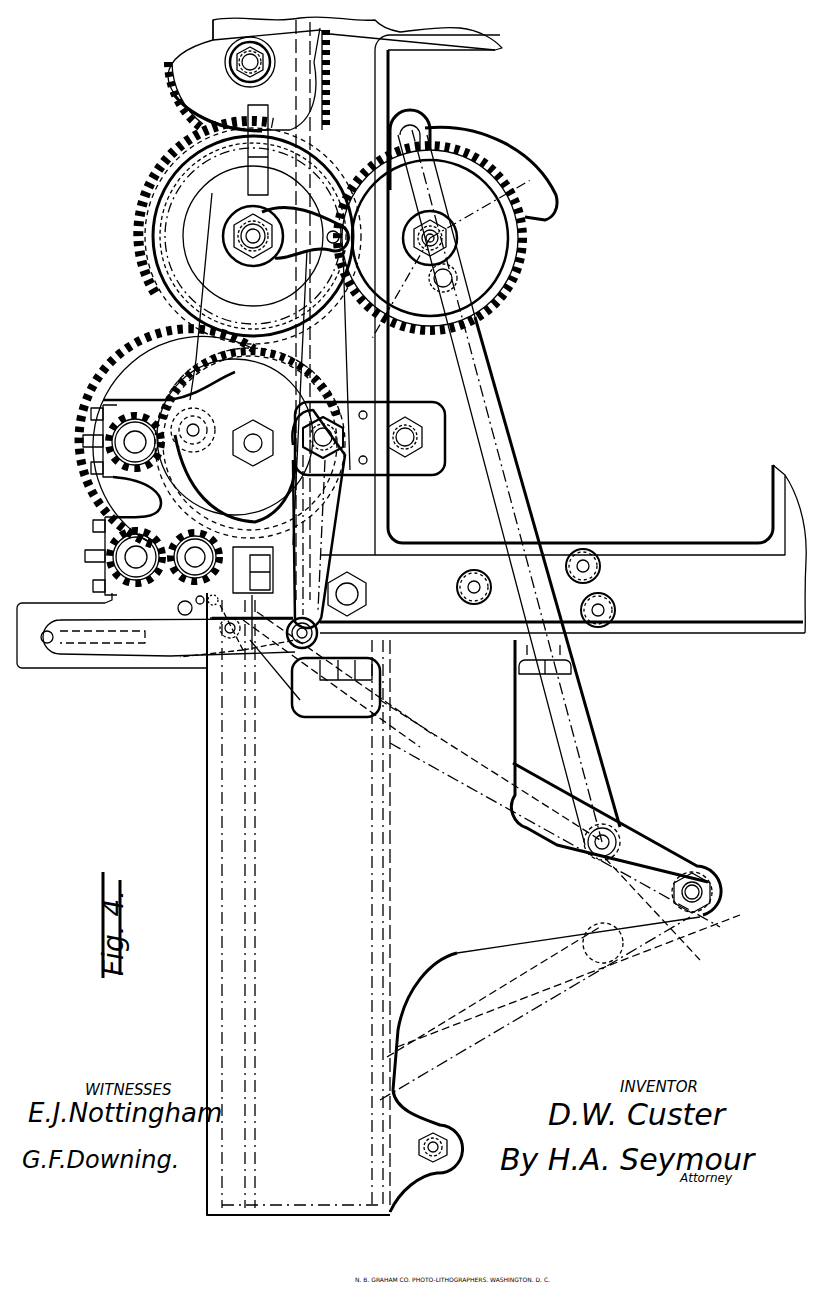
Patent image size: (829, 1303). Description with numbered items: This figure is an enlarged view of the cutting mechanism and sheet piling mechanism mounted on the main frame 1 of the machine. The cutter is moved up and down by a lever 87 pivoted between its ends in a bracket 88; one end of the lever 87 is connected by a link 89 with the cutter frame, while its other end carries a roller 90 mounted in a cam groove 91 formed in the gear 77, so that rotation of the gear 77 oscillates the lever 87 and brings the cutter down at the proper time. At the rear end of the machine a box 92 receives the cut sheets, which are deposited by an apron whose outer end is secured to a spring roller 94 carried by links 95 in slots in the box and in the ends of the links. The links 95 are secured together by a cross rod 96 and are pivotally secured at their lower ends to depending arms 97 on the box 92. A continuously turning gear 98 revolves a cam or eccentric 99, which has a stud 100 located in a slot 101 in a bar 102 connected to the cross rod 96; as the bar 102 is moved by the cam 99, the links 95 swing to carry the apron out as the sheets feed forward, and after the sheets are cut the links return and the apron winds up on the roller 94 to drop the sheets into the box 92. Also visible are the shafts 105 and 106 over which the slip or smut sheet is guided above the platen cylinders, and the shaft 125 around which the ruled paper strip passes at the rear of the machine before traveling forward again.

The main frame 1 is at (563, 334).
The gear 77 is at (232, 232).
The lever 87 is at (330, 532).
The bracket 88 is at (405, 477).
The link 89 is at (163, 656).
The roller 90 is at (280, 232).
The cam groove 91 is at (284, 397).
The box 92 is at (321, 904).
The spring roller 94 is at (248, 655).
The links 95 is at (533, 790).
The cross rod 96 is at (607, 833).
The depending arms 97 is at (617, 839).
The gear 98 is at (525, 250).
The cam or eccentric 99 is at (512, 160).
The stud 100 is at (455, 282).
The slot 101 is at (412, 110).
The bar 102 is at (503, 425).
The shaft 105 is at (606, 627).
The shaft 106 is at (462, 587).
The shaft 125 is at (585, 549).